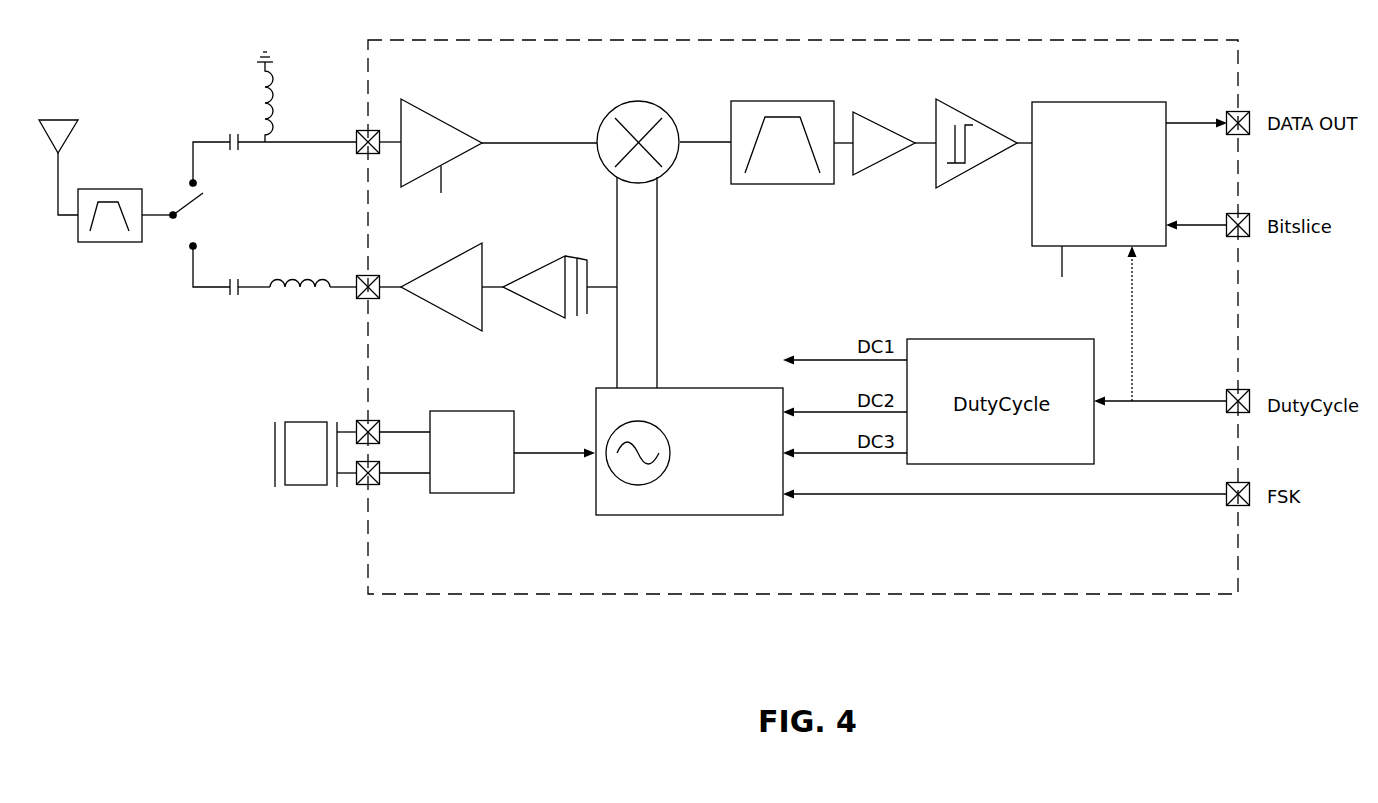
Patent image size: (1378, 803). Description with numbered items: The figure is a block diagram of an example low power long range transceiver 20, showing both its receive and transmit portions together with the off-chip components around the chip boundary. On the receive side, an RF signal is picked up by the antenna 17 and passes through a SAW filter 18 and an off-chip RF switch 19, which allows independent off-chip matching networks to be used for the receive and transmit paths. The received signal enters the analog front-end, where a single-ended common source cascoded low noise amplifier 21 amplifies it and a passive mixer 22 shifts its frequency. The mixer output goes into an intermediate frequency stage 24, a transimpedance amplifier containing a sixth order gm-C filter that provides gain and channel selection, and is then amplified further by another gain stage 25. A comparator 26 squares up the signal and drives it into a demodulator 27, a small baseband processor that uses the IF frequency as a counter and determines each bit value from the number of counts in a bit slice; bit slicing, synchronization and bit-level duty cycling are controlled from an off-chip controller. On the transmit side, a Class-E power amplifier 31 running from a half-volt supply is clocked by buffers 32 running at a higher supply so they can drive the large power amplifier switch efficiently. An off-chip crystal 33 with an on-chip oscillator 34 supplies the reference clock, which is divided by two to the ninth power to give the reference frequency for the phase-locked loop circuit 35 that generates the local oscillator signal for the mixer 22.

The antenna 17 is at (56, 119).
The SAW filter 18 is at (105, 243).
The RF switch 19 is at (187, 203).
The low power long range transceiver 20 is at (213, 524).
The low noise amplifier 21 is at (431, 113).
The passive mixer 22 is at (622, 103).
The intermediate frequency stage 24 is at (784, 185).
The gain stage 25 is at (888, 158).
The comparator 26 is at (977, 164).
The demodulator 27 is at (1092, 102).
The power amplifier 31 is at (437, 308).
The buffers 32 is at (533, 303).
The crystal 33 is at (305, 486).
The oscillator 34 is at (470, 494).
The phase-locked loop circuit 35 is at (680, 516).